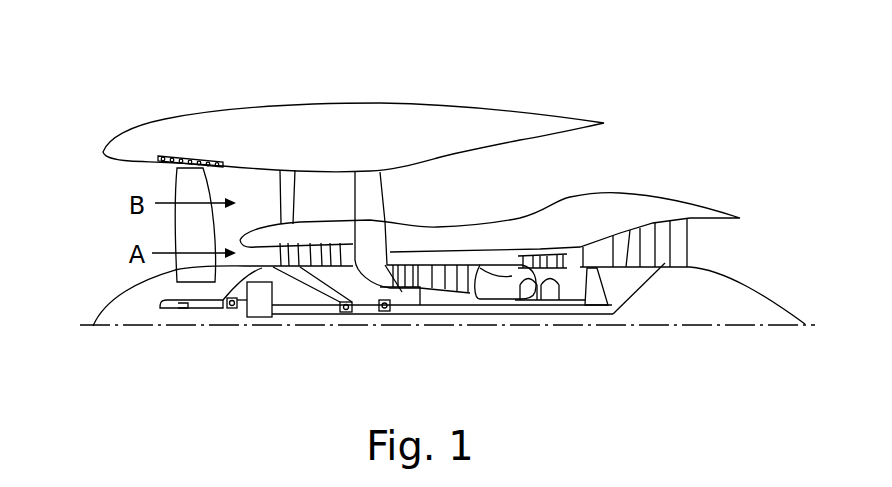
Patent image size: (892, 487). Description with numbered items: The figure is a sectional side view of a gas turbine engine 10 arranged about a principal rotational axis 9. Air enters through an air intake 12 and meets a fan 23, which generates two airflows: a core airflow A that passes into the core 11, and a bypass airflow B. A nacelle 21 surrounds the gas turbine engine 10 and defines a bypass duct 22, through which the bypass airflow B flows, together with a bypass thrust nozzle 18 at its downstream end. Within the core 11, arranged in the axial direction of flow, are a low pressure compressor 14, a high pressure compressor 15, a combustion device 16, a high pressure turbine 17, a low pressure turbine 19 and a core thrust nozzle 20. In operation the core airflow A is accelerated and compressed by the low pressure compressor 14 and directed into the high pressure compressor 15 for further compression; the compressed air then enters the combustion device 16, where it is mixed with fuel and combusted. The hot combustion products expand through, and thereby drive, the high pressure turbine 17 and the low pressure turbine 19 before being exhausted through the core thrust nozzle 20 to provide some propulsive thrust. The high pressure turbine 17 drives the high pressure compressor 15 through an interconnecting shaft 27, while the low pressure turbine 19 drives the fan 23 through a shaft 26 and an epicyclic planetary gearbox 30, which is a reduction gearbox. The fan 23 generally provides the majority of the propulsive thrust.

The principal rotational axis 9 is at (713, 327).
The gas turbine engine 10 is at (338, 94).
The core 11 is at (513, 238).
The air intake 12 is at (188, 231).
The low pressure compressor 14 is at (317, 250).
The high pressure compressor 15 is at (440, 262).
The combustion device 16 is at (492, 305).
The high pressure turbine 17 is at (553, 252).
The bypass thrust nozzle 18 is at (704, 118).
The low pressure turbine 19 is at (660, 305).
The core thrust nozzle 20 is at (750, 251).
The nacelle 21 is at (370, 112).
The bypass duct 22 is at (586, 161).
The fan 23 is at (180, 240).
The shaft 26 is at (407, 318).
The interconnecting shaft 27 is at (463, 307).
The epicyclic planetary gearbox 30 is at (262, 307).